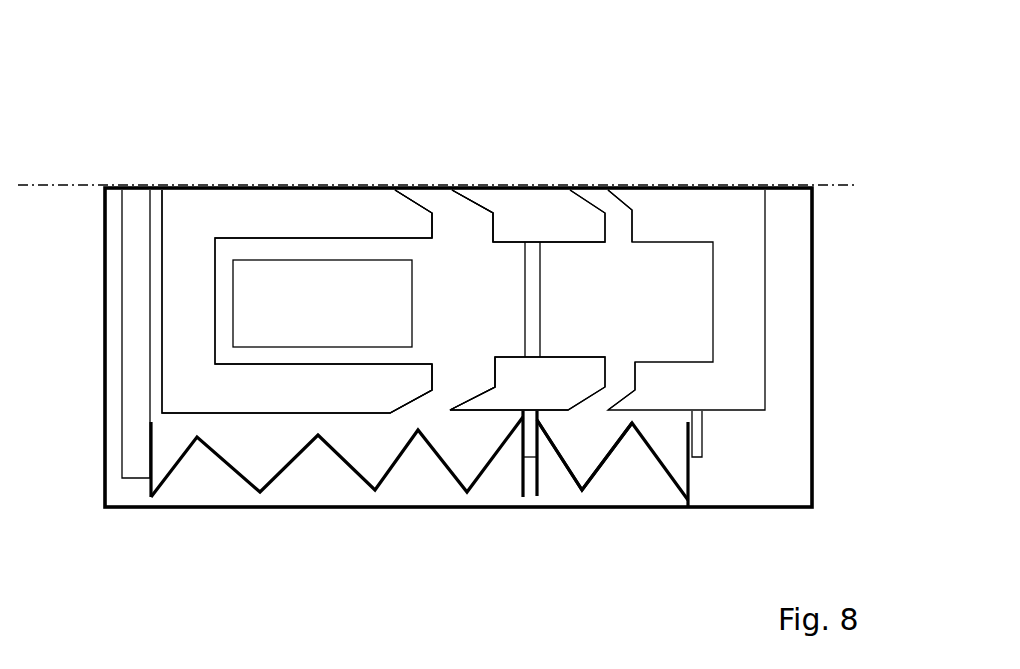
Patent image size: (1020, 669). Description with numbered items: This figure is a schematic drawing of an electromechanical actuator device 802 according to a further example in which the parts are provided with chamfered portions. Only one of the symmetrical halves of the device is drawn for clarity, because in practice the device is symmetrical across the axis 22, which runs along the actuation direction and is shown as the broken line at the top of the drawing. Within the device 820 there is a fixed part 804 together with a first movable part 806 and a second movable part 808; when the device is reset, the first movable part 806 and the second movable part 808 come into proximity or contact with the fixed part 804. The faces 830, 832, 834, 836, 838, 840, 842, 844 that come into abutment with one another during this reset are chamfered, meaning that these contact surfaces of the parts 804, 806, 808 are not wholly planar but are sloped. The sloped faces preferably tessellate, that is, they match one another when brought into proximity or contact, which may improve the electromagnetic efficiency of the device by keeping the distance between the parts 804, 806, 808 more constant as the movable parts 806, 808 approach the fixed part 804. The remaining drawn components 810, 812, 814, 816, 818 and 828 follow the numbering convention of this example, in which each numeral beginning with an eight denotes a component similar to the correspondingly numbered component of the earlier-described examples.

The axis 22 is at (459, 185).
The electromechanical actuator device 802 is at (143, 97).
The fixed part 804 is at (247, 168).
The first movable part 806 is at (513, 170).
The second movable part 808 is at (688, 170).
The meandered conductor 810 is at (350, 472).
The left connection trace 812 is at (140, 442).
The center feed posts 814 is at (527, 460).
The right meander segment 816 is at (580, 495).
The right connection stub 818 is at (697, 460).
The device 820 is at (263, 312).
The first element outline 828 is at (292, 227).
The chamfered face 830 is at (412, 398).
The chamfered face 832 is at (480, 395).
The chamfered face 834 is at (404, 200).
The chamfered face 836 is at (473, 208).
The chamfered face 838 is at (586, 398).
The chamfered face 840 is at (628, 396).
The chamfered face 842 is at (585, 201).
The chamfered face 844 is at (621, 203).